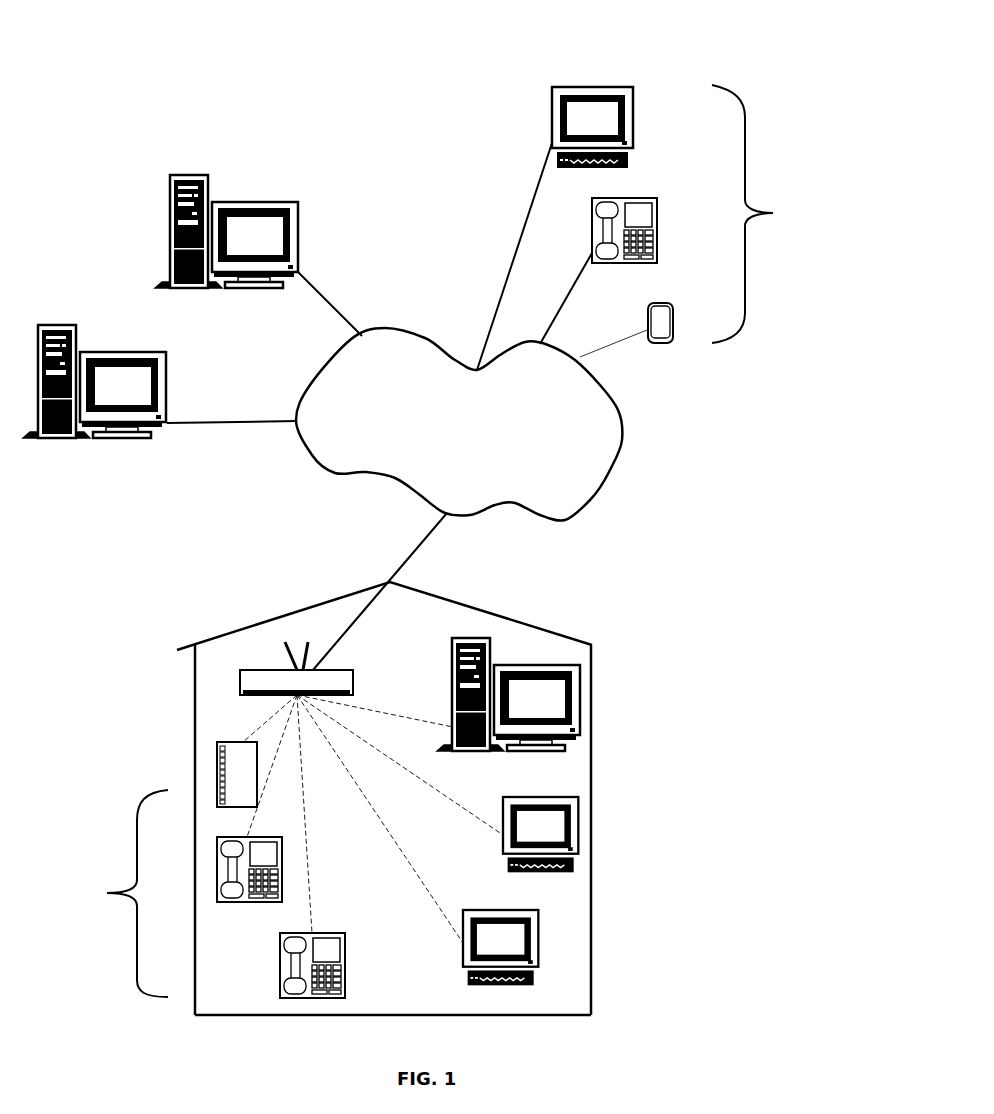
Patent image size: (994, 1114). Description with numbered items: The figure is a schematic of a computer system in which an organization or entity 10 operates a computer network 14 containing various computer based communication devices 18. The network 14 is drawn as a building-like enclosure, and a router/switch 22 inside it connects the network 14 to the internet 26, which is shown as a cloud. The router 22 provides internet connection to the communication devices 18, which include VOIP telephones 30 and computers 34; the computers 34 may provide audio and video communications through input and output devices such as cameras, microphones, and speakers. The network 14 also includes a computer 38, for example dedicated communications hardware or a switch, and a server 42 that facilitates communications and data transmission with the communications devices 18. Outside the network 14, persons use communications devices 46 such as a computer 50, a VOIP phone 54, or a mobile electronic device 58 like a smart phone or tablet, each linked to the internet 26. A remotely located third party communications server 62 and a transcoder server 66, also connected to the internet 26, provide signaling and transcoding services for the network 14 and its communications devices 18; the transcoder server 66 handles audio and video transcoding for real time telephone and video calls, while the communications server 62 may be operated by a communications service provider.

The organization or entity 10 is at (412, 798).
The computer network 14 is at (592, 644).
The communication devices 18 is at (122, 893).
The router/switch 22 is at (292, 665).
The internet 26 is at (459, 424).
The VOIP telephones 30 is at (212, 844).
The computers 34 is at (519, 796).
The computer 38 is at (212, 749).
The server 42 is at (440, 639).
The communications devices 46 is at (767, 214).
The computer 50 is at (636, 66).
The VOIP phone 54 is at (679, 191).
The mobile electronic device 58 is at (683, 299).
The communications server 62 is at (299, 201).
The transcoder server 66 is at (168, 351).